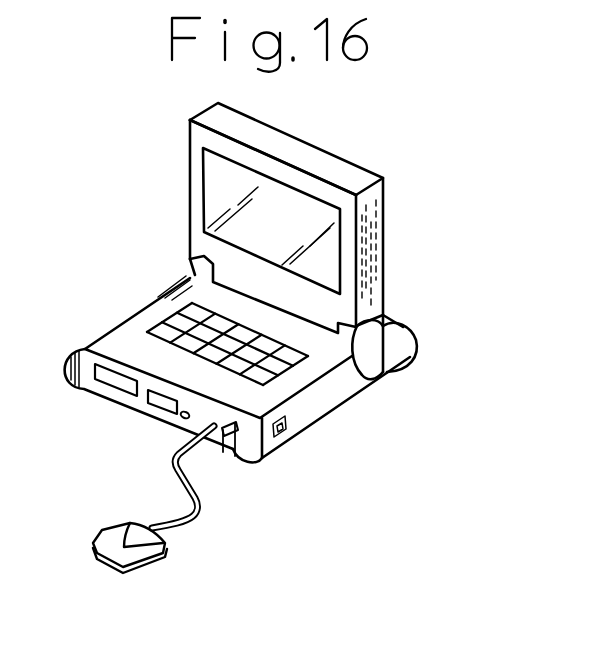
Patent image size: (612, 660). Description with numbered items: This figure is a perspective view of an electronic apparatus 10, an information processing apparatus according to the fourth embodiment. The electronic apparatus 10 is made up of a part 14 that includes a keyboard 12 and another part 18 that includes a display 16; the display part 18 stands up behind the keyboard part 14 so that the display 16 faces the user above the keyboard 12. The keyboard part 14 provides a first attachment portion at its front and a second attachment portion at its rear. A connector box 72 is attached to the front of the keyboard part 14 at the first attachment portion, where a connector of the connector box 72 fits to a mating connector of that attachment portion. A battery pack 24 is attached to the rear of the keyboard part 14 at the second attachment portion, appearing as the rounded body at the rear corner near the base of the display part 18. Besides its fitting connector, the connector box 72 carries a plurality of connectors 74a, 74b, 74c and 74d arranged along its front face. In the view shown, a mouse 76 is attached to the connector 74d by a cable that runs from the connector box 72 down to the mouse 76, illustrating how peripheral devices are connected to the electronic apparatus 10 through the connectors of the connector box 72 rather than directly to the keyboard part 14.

The electronic apparatus 10 is at (414, 166).
The keyboard 12 is at (275, 364).
The part including the keyboard 14 is at (323, 360).
The display 16 is at (273, 203).
The part including the display 18 is at (328, 192).
The battery pack 24 is at (417, 344).
The connector box 72 is at (250, 452).
The connector 74a is at (113, 380).
The connector 74b is at (160, 402).
The connector 74c is at (187, 421).
The connector 74d is at (213, 430).
The mouse 76 is at (137, 556).